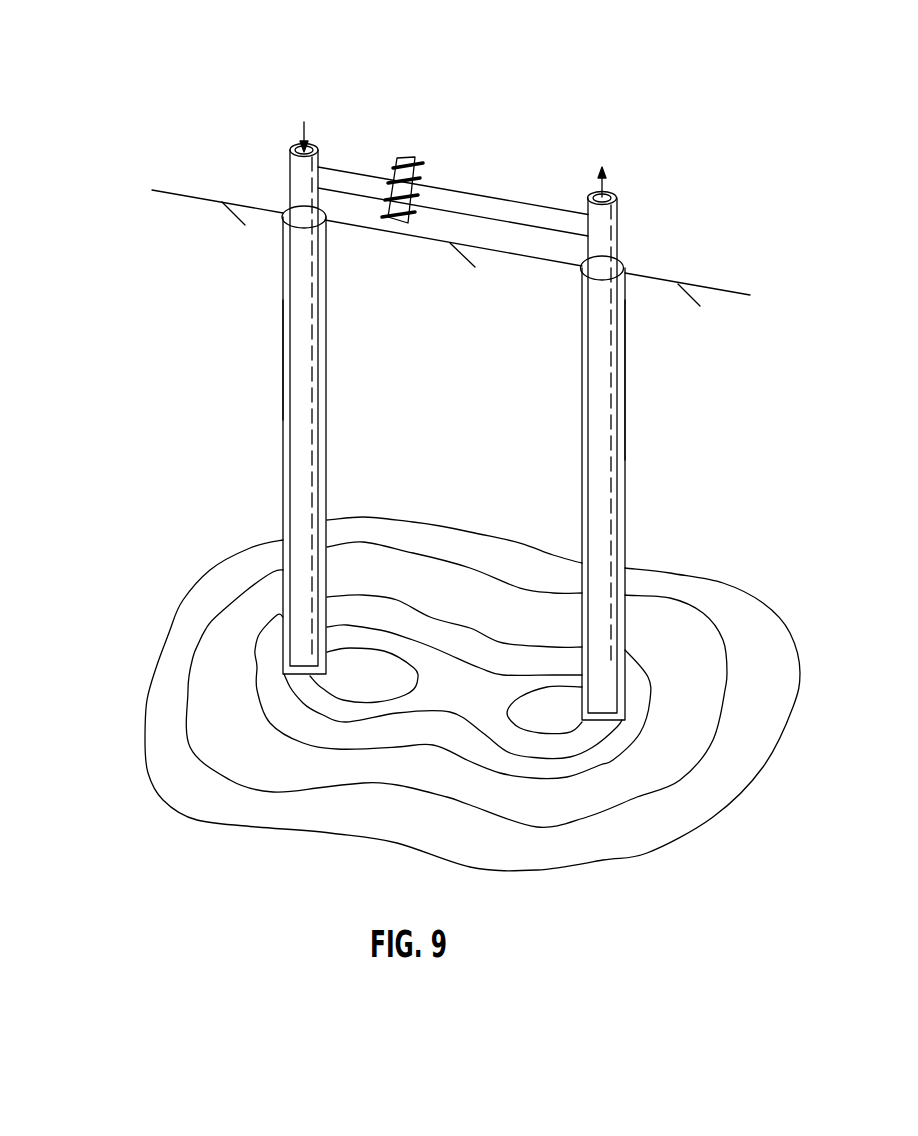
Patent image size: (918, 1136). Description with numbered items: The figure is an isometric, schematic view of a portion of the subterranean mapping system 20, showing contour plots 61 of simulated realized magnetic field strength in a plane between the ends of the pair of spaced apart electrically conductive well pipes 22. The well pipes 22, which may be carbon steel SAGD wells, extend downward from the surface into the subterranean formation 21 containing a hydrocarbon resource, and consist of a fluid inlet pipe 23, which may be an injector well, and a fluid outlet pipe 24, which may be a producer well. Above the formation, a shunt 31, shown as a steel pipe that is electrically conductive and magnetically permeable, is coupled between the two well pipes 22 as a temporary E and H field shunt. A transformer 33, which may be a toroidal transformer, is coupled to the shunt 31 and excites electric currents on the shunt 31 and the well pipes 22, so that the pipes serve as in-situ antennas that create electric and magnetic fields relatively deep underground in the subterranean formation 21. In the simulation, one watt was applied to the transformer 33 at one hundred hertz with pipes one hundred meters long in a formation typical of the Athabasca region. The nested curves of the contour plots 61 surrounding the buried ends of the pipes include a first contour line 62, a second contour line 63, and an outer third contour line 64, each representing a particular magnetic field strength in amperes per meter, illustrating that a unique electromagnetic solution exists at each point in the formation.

The subterranean mapping system 20 is at (527, 137).
The subterranean formation 21 is at (179, 225).
The spaced apart electrically conductive well pipes 22 is at (272, 350).
The fluid inlet pipe 23 is at (283, 288).
The fluid outlet pipe 24 is at (625, 347).
The shunt 31 is at (548, 203).
The transformer 33 is at (401, 155).
The contour plots 61 is at (103, 613).
The first contour line 62 is at (327, 748).
The second contour line 63 is at (560, 735).
The third contour line 64 is at (727, 582).